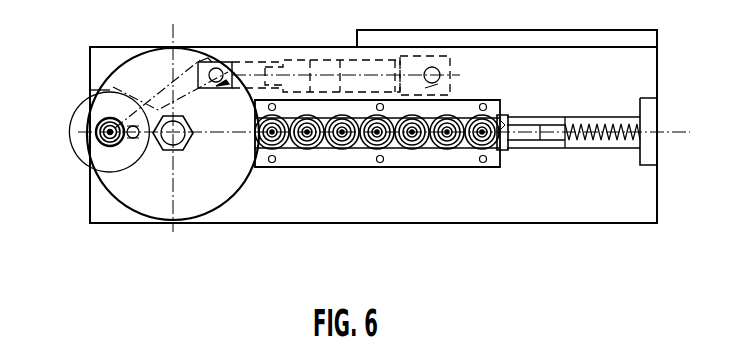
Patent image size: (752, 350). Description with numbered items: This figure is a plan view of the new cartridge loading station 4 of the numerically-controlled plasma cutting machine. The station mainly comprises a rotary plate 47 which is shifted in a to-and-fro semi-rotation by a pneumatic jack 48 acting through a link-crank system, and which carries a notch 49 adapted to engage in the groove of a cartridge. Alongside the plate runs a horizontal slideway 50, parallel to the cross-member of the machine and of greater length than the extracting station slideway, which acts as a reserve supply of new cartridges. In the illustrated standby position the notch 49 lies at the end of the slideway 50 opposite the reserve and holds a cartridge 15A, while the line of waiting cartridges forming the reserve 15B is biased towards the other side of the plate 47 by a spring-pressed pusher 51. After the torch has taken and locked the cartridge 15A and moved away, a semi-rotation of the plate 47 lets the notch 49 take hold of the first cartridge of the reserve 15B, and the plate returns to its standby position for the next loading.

The new cartridge loading station 4 is at (538, 226).
The cartridge 15A is at (106, 167).
The reserve cartridges 15B is at (252, 78).
The rotary plate 47 is at (156, 66).
The pneumatic jack 48 is at (290, 66).
The notch 49 is at (96, 134).
The horizontal slideway 50 is at (327, 148).
The spring-pressed pusher 51 is at (506, 118).